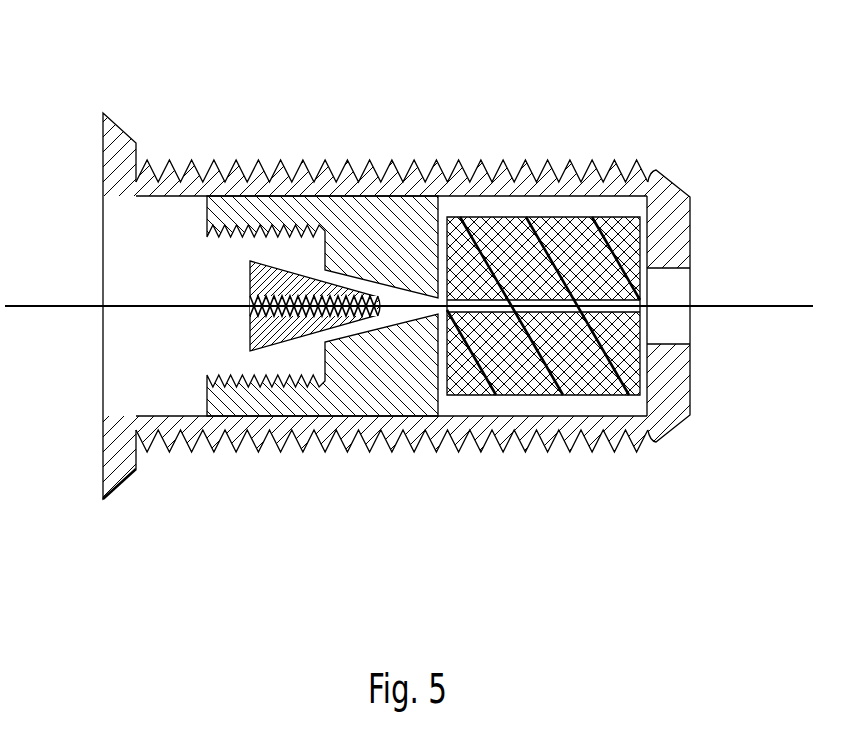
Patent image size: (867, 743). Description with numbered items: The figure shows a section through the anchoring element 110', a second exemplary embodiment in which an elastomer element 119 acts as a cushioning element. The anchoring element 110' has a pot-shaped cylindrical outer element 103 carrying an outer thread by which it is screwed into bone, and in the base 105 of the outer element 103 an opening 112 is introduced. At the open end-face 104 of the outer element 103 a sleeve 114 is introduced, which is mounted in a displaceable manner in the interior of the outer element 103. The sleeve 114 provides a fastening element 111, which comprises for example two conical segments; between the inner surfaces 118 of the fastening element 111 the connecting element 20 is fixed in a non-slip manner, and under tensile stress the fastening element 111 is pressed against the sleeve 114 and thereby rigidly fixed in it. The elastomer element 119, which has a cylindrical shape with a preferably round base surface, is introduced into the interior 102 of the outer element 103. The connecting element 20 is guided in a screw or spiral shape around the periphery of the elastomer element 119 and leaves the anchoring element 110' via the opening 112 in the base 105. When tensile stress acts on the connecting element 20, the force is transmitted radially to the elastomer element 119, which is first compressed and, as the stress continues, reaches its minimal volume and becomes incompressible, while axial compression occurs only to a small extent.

The anchoring element 110' is at (409, 278).
The connecting element 20 is at (788, 303).
The interior 102 is at (486, 208).
The cylindrical outer element 103 is at (503, 423).
The open end-face 104 is at (118, 450).
The base 105 is at (680, 373).
The fastening element 111 is at (250, 285).
The opening 112 is at (678, 332).
The sleeve 114 is at (255, 213).
The inner surfaces 118 is at (250, 329).
The elastomer element 119 is at (590, 377).